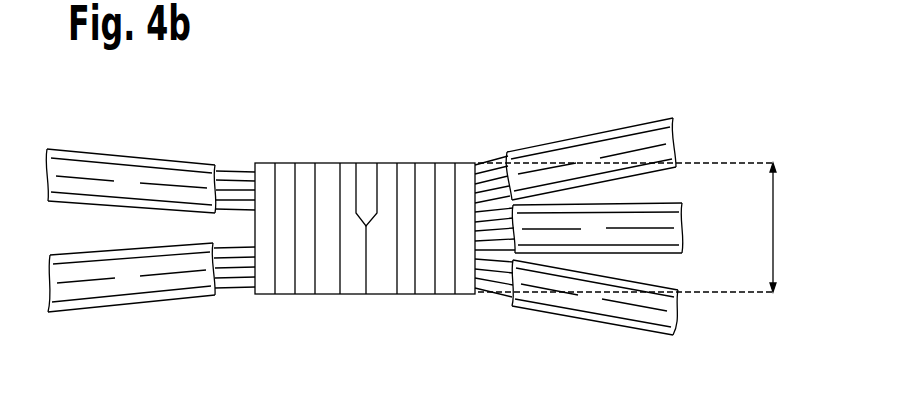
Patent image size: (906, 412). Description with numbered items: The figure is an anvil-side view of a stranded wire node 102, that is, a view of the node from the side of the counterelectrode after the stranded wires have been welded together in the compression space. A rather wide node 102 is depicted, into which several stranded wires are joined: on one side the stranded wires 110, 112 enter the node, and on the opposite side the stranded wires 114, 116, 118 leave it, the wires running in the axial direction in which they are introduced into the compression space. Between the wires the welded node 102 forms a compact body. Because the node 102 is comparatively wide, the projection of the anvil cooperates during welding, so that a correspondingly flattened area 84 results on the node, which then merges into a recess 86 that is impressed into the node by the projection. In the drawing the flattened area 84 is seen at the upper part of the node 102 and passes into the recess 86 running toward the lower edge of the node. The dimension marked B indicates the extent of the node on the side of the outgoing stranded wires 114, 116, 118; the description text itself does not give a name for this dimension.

The stranded wire 110 is at (134, 175).
The stranded wire 112 is at (132, 283).
The flattened area 84 is at (367, 182).
The recess 86 is at (360, 270).
The node 102 is at (383, 275).
The stranded wire 114 is at (602, 147).
The stranded wire 116 is at (683, 217).
The stranded wire 118 is at (602, 303).
The width B is at (776, 227).